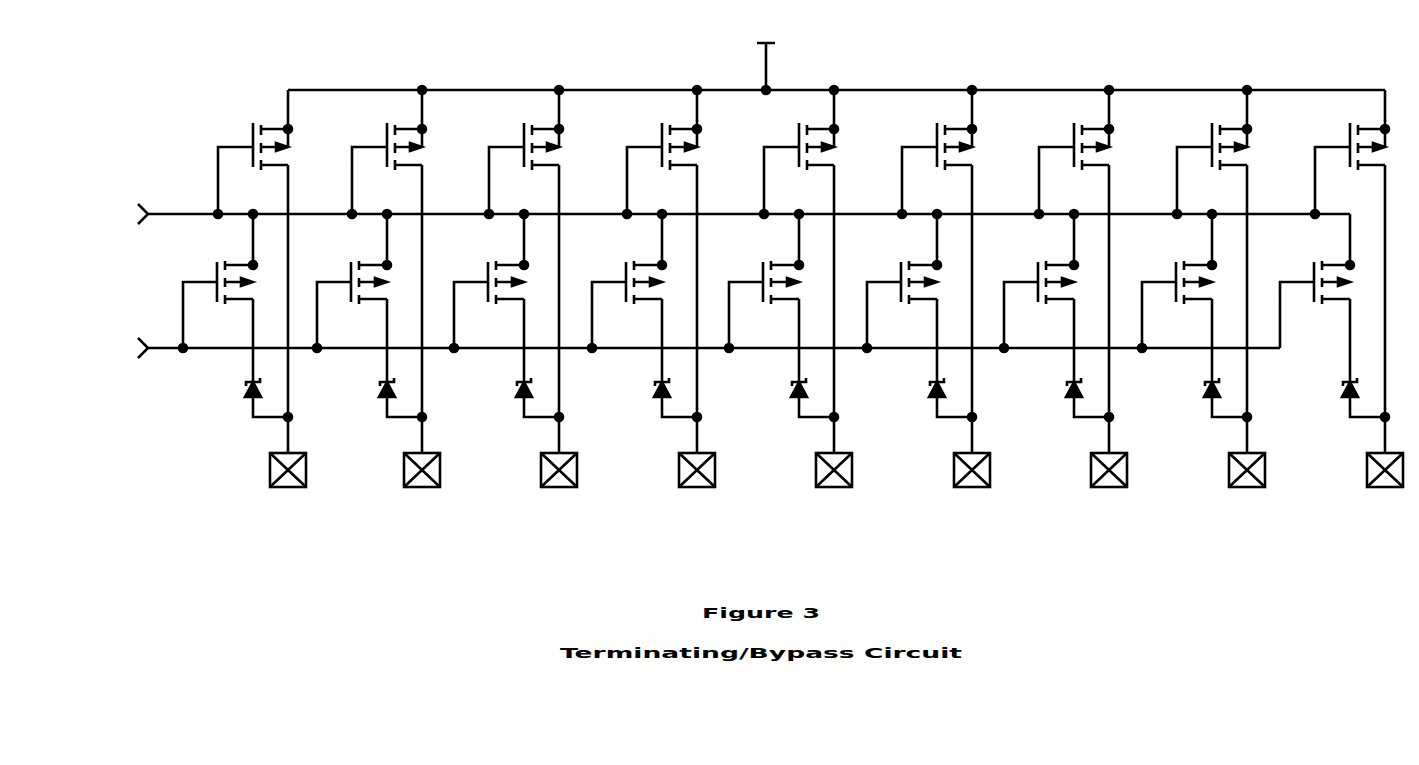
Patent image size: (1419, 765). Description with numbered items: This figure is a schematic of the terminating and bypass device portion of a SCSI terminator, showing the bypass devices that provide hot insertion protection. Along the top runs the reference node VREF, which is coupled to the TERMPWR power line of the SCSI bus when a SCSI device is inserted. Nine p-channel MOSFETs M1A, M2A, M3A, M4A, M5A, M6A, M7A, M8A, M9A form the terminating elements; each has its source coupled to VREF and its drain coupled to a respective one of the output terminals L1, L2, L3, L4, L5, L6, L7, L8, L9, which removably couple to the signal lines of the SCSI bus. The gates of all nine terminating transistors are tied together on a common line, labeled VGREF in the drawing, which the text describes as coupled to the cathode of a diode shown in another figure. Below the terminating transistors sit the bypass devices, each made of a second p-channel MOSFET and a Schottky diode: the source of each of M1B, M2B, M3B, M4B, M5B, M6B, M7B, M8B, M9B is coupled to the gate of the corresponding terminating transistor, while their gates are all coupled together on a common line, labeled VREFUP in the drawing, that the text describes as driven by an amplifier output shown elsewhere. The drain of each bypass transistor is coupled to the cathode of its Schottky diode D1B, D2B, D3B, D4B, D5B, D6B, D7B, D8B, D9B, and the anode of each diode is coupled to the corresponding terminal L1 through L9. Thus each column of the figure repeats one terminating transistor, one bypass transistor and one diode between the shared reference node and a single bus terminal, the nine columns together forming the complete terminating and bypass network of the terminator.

The reference node VREF is at (836, 55).
The gate reference voltage input VGREF is at (691, 218).
The pull-up reference voltage input VREFUP is at (656, 351).
The p-channel MOSFET M1A is at (253, 159).
The p-channel MOSFET M2A is at (387, 159).
The p-channel MOSFET M3A is at (524, 159).
The p-channel MOSFET M4A is at (662, 159).
The p-channel MOSFET M5A is at (799, 159).
The p-channel MOSFET M6A is at (937, 159).
The p-channel MOSFET M7A is at (1074, 159).
The p-channel MOSFET M8A is at (1212, 159).
The p-channel MOSFET M9A is at (1350, 159).
The p-channel MOSFET M1B is at (218, 292).
The p-channel MOSFET M2B is at (352, 292).
The p-channel MOSFET M3B is at (489, 292).
The p-channel MOSFET M4B is at (627, 292).
The p-channel MOSFET M5B is at (764, 292).
The p-channel MOSFET M6B is at (902, 292).
The p-channel MOSFET M7B is at (1039, 292).
The p-channel MOSFET M8B is at (1177, 292).
The p-channel MOSFET M9B is at (1315, 292).
The Schottky diode D1B is at (243, 397).
The Schottky diode D2B is at (377, 397).
The Schottky diode D3B is at (514, 397).
The Schottky diode D4B is at (652, 397).
The Schottky diode D5B is at (789, 397).
The Schottky diode D6B is at (927, 397).
The Schottky diode D7B is at (1064, 397).
The Schottky diode D8B is at (1202, 397).
The Schottky diode D9B is at (1340, 397).
The output terminal L1 is at (288, 489).
The output terminal L2 is at (422, 489).
The output terminal L3 is at (559, 489).
The output terminal L4 is at (697, 489).
The output terminal L5 is at (834, 489).
The output terminal L6 is at (972, 489).
The output terminal L7 is at (1109, 489).
The output terminal L8 is at (1247, 489).
The output terminal L9 is at (1385, 489).